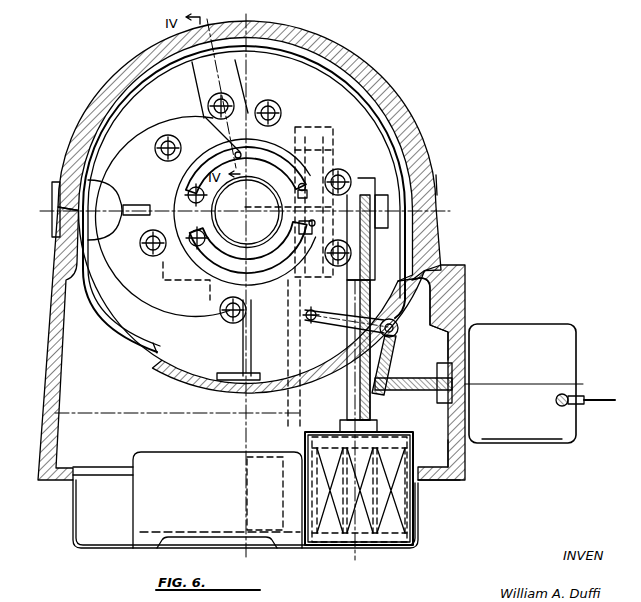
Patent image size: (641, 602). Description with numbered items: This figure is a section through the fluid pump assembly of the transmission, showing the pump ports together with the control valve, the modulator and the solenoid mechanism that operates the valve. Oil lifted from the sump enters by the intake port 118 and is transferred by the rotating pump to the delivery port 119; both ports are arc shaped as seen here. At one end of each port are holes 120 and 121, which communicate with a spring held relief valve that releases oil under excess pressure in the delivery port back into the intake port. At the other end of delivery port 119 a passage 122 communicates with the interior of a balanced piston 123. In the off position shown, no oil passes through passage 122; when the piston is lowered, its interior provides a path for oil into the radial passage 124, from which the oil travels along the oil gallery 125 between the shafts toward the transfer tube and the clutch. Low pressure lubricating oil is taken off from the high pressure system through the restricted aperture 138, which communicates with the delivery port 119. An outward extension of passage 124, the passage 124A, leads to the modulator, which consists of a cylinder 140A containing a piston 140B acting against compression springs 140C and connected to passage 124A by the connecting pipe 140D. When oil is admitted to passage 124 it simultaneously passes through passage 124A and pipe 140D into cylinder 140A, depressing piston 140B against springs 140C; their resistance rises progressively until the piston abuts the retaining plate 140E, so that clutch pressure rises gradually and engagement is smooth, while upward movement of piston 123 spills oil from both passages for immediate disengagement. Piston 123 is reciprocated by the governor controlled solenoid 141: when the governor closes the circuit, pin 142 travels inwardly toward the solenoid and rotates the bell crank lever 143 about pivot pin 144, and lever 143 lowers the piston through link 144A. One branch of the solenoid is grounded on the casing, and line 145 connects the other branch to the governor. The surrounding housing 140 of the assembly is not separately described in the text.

The intake port 118 is at (236, 268).
The delivery port 119 is at (290, 168).
The hole 120 is at (188, 248).
The hole 121 is at (172, 187).
The passage 122 is at (306, 186).
The balanced piston 123 is at (346, 180).
The radial passage 124 is at (330, 205).
The passage 124A is at (437, 183).
The oil gallery 125 is at (270, 170).
The restricted aperture 138 is at (248, 112).
The housing 140 is at (208, 104).
The cylinder 140A is at (408, 494).
The piston 140B is at (467, 458).
The compression springs 140C is at (388, 510).
The connecting pipe 140D is at (350, 388).
The retaining plate 140E is at (367, 537).
The governor controlled solenoid 141 is at (505, 330).
The pin 142 is at (421, 387).
The bell crank lever 143 is at (342, 326).
The pivot pin 144 is at (398, 326).
The link 144A is at (306, 295).
The line 145 is at (600, 392).